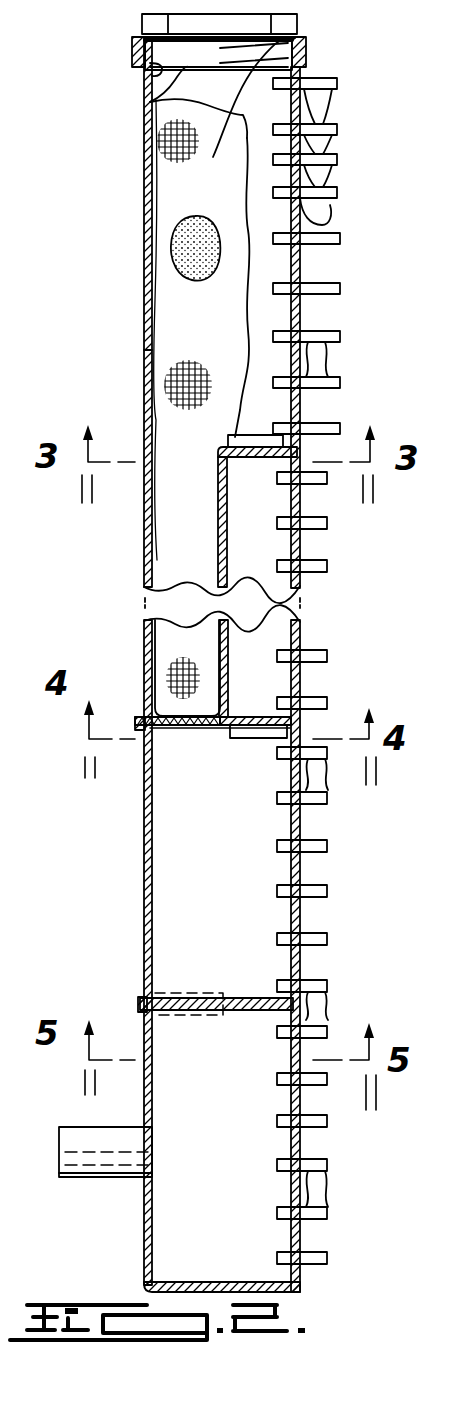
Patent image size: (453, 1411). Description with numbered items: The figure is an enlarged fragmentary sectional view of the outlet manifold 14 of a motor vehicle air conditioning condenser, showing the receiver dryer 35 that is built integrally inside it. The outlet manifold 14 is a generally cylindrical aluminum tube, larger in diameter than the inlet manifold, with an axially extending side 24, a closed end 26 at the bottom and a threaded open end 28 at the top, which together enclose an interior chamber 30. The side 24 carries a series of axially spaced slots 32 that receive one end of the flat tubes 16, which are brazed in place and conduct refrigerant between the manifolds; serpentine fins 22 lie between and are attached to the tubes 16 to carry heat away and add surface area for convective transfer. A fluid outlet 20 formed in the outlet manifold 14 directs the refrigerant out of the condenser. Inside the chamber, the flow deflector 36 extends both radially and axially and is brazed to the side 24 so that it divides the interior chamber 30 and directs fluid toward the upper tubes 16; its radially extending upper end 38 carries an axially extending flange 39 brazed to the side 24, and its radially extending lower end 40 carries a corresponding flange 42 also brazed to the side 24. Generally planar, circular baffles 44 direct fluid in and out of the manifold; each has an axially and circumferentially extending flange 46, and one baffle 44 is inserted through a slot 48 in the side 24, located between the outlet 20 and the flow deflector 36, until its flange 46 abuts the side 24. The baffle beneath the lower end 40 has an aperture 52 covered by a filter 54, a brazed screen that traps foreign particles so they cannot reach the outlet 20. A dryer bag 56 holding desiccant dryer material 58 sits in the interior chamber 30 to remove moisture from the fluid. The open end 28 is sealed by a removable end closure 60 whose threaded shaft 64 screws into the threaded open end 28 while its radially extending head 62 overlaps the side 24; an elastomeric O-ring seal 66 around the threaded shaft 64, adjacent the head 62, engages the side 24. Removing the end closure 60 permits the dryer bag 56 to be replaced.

The outlet manifold 14 is at (64, 178).
The tubes 16 is at (327, 79).
The fluid outlet 20 is at (72, 1127).
The fins 22 is at (330, 97).
The side 24 is at (143, 295).
The closed end 26 is at (265, 1282).
The open end 28 is at (143, 88).
The interior chamber 30 is at (291, 262).
The slots 32 is at (300, 233).
The receiver dryer 35 is at (134, 398).
The flow deflector 36 is at (230, 543).
The upper end 38 is at (247, 410).
The flange 39 is at (300, 445).
The lower end 40 is at (263, 712).
The flange 42 is at (307, 723).
The baffles 44 is at (248, 738).
The flange 46 is at (143, 716).
The slot 48 is at (163, 998).
The aperture 52 is at (213, 733).
The filter 54 is at (172, 728).
The dryer bag 56 is at (160, 214).
The dryer material 58 is at (187, 252).
The end closure 60 is at (300, 30).
The head 62 is at (138, 25).
The threaded shaft 64 is at (148, 110).
The seal 66 is at (244, 116).